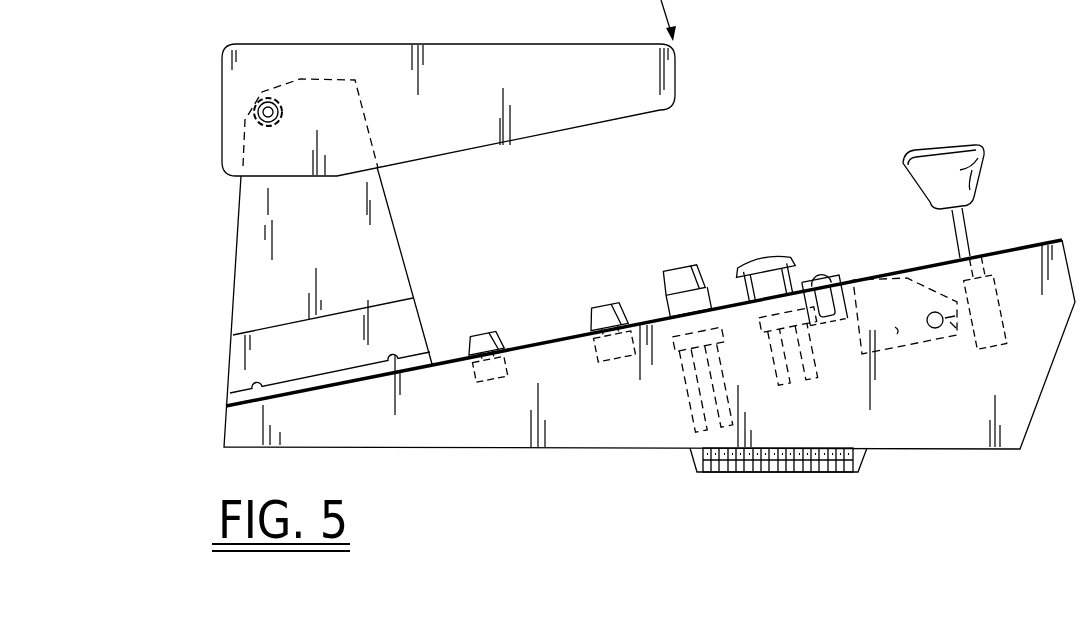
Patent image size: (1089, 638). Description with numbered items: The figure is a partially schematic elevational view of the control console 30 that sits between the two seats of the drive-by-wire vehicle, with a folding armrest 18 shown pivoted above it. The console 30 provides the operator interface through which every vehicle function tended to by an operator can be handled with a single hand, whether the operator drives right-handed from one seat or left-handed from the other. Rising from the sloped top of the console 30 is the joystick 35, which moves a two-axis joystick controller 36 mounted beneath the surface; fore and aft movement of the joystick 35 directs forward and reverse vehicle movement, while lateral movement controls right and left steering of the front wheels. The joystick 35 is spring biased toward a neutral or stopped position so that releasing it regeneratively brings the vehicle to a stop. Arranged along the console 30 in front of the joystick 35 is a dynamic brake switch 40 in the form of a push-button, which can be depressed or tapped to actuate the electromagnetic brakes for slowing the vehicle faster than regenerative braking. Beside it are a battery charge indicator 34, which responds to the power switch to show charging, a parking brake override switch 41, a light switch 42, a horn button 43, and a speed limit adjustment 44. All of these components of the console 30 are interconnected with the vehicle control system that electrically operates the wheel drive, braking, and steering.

The folding armrest 18 is at (491, 45).
The control console 30 is at (679, 197).
The battery charge indicator 34 is at (823, 272).
The joystick 35 is at (983, 160).
The two-axis joystick controller 36 is at (910, 353).
The dynamic brake switch 40 is at (766, 255).
The parking brake override switch 41 is at (745, 290).
The light switch 42 is at (682, 272).
The horn button 43 is at (597, 304).
The speed limit adjustment 44 is at (470, 332).